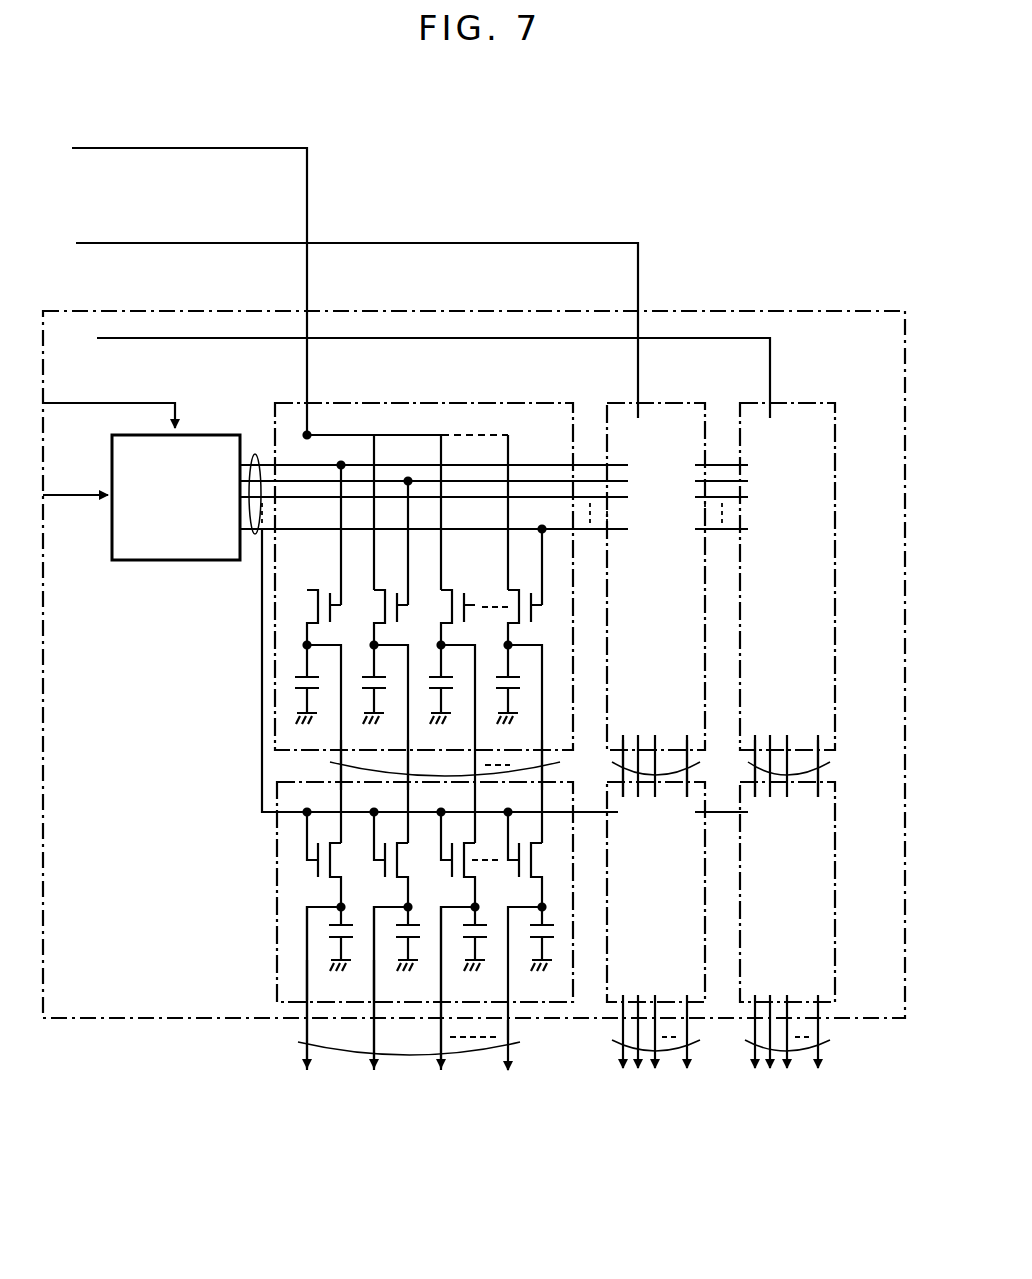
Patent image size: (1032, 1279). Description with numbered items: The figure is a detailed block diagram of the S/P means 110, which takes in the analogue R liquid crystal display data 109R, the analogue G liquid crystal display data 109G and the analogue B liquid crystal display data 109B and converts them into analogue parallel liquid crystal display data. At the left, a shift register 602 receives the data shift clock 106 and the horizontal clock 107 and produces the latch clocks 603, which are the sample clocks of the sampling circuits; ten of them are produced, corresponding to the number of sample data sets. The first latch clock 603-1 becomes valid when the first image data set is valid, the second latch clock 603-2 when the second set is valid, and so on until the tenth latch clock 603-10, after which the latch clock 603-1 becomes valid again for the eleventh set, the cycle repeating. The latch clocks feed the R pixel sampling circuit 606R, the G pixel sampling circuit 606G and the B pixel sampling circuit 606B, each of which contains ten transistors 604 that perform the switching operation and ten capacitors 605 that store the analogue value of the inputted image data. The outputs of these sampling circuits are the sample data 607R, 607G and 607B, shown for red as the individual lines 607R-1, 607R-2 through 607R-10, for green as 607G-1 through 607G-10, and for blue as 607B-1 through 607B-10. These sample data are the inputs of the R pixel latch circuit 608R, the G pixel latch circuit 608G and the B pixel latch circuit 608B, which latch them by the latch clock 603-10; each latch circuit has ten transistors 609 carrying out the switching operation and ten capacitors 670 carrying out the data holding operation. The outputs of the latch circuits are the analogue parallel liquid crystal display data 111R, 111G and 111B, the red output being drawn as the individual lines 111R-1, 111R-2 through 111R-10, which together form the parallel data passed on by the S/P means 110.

The S/P means 110 is at (830, 311).
The analogue R liquid crystal display data 109R is at (130, 148).
The analogue G liquid crystal display data 109G is at (135, 243).
The analogue B liquid crystal display data 109B is at (140, 338).
The data shift clock 106 is at (85, 403).
The horizontal clock 107 is at (72, 495).
The shift register 602 is at (192, 435).
The latch clocks 603 is at (256, 534).
The latch clock 603-1 is at (312, 465).
The latch clock 603-2 is at (385, 465).
The latch clock 603-10 is at (508, 465).
The R pixel sampling circuit 606R is at (430, 403).
The G pixel sampling circuit 606G is at (655, 403).
The B pixel sampling circuit 606B is at (790, 403).
The transistor 604 is at (305, 608).
The capacitor 605 is at (296, 683).
The sample data 607R is at (330, 768).
The sample data 607R-1 is at (375, 760).
The sample data 607R-2 is at (441, 760).
The sample data 607R-10 is at (545, 748).
The sample data 607G is at (608, 762).
The sample data 607G-1 is at (623, 748).
The sample data 607G-10 is at (687, 748).
The sample data 607B is at (750, 762).
The sample data 607B-1 is at (755, 748).
The sample data 607B-10 is at (818, 748).
The R pixel latch circuit 608R is at (290, 1005).
The G pixel latch circuit 608G is at (612, 1008).
The B pixel latch circuit 608B is at (825, 1008).
The transistor 609 is at (308, 868).
The holding capacitor 670 is at (330, 930).
The analogue parallel liquid crystal display data 111R is at (298, 1045).
The analogue parallel liquid crystal display data 111R-1 is at (342, 982).
The analogue parallel liquid crystal display data 111R-2 is at (408, 982).
The analogue parallel liquid crystal display data 111R-10 is at (515, 1055).
The analogue parallel liquid crystal display data 111G is at (612, 1042).
The analogue parallel liquid crystal display data 111B is at (830, 1043).